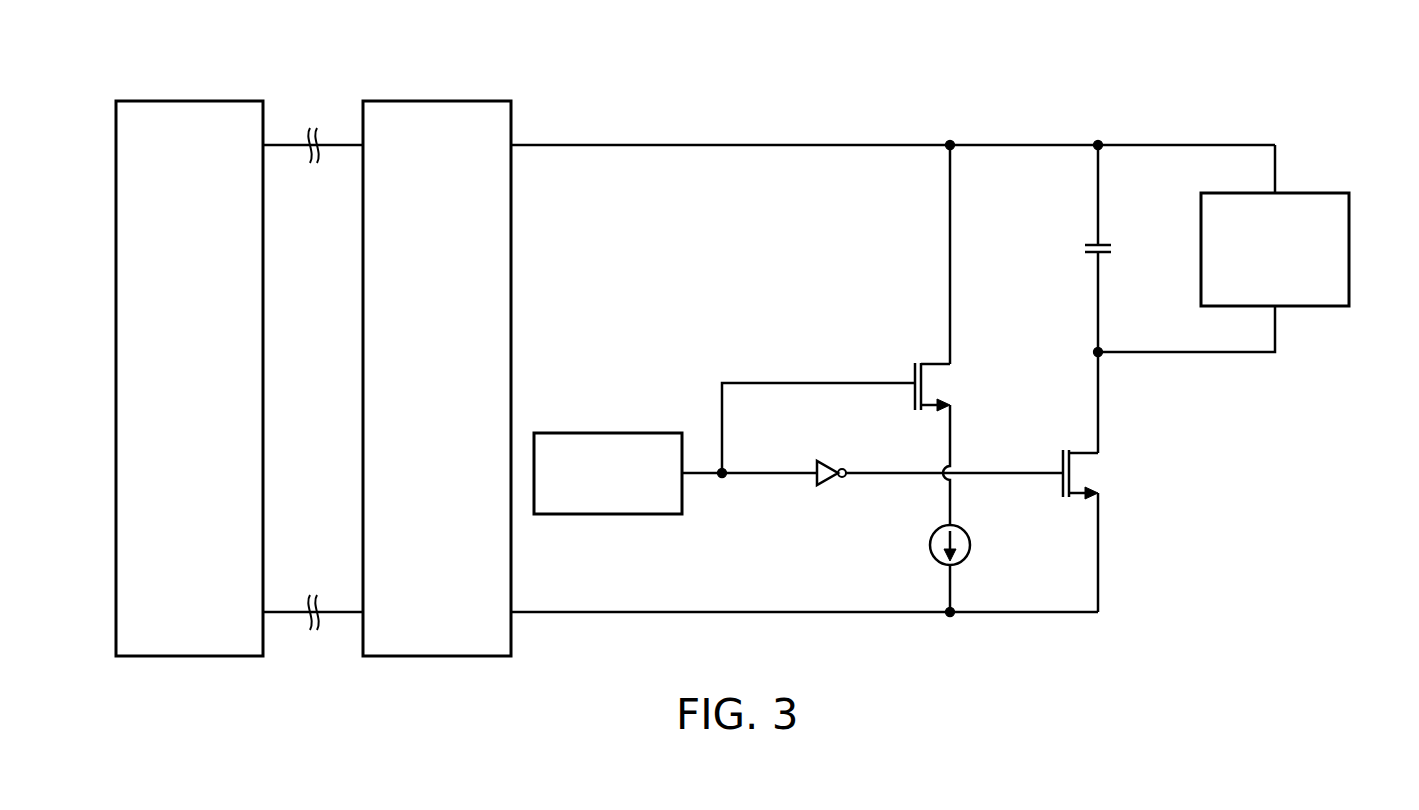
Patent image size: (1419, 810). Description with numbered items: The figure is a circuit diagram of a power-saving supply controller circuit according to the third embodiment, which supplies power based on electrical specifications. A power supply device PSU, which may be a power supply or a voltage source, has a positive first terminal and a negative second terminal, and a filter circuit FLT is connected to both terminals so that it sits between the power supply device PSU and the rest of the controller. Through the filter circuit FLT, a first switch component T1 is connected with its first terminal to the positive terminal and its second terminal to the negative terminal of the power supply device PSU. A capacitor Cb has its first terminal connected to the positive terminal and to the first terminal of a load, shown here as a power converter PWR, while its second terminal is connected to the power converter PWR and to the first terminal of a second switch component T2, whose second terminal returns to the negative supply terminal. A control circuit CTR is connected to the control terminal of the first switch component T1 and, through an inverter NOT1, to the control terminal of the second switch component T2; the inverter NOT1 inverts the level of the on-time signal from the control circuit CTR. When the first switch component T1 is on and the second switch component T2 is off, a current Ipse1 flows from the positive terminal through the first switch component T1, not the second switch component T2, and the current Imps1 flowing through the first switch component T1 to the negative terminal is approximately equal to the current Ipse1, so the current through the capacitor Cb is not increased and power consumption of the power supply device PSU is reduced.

The power supply device PSU is at (190, 100).
The filter circuit FLT is at (438, 100).
The control circuit CTR is at (609, 432).
The inverter NOT1 is at (828, 490).
The first switch component T1 is at (953, 278).
The second switch component T2 is at (1100, 474).
The current Imps1 is at (995, 545).
The capacitor Cb is at (1118, 248).
The power converter PWR is at (1323, 192).
The current Ipse1 is at (620, 136).